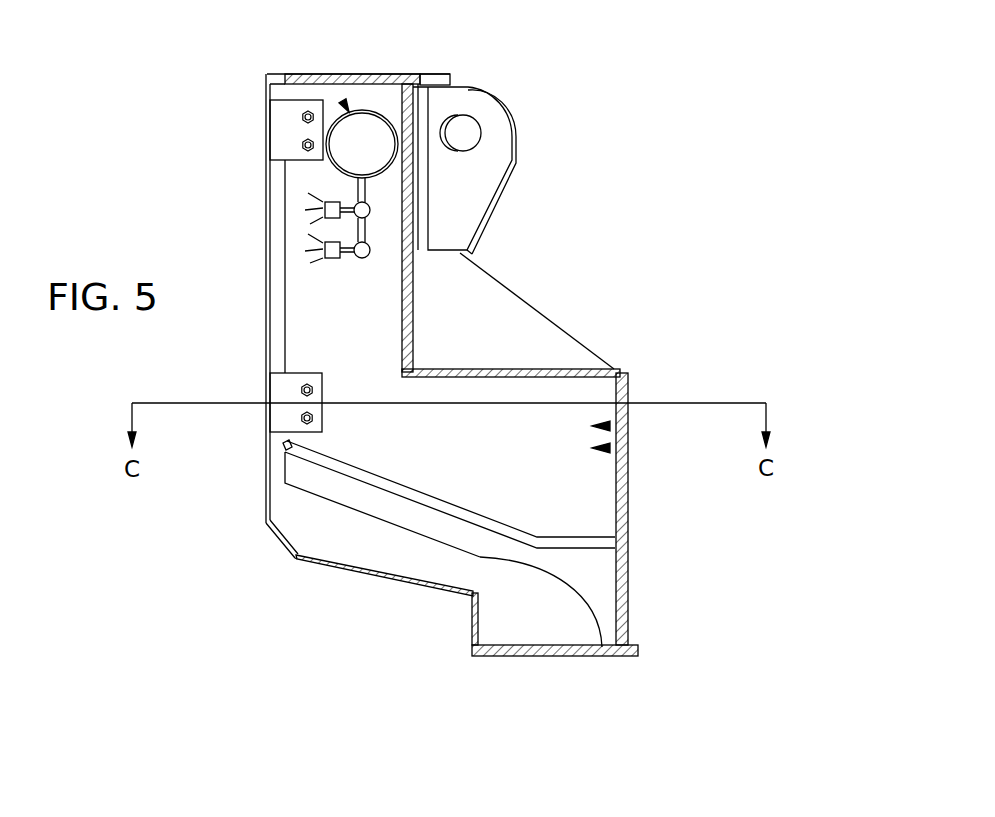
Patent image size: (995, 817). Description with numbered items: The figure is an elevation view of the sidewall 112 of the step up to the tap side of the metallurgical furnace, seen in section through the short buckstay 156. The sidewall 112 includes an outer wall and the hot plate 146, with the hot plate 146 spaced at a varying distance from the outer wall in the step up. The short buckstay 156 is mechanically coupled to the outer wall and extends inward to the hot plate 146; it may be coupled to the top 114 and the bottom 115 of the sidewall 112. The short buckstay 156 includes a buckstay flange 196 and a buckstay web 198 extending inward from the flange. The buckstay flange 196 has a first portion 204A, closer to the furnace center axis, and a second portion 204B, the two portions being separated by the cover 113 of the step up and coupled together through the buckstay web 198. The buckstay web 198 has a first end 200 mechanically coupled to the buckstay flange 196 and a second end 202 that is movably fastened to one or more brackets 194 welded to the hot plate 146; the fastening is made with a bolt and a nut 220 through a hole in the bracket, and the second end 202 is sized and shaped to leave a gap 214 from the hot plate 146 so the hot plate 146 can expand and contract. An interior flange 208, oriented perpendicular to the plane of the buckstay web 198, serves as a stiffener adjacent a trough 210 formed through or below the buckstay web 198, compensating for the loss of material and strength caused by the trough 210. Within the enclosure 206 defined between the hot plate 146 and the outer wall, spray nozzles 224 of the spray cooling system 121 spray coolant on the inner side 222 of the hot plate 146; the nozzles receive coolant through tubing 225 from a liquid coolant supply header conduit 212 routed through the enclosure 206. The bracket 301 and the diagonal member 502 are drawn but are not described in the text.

The top 114 is at (310, 72).
The spray cooling system 121 is at (342, 100).
The liquid coolant supply header conduit 212 is at (382, 118).
The mounting bracket 301 is at (512, 110).
The bracket 194 is at (284, 122).
The buckstay web 198 is at (312, 207).
The tubing 225 is at (363, 193).
The first portion 204A is at (413, 217).
The second end 202 is at (290, 273).
The spray nozzle 224 is at (333, 258).
The inner side 222 is at (270, 297).
The gap 214 is at (277, 322).
The diagonal brace 502 is at (518, 337).
The cover 113 is at (597, 368).
The nut 220 is at (316, 388).
The short buckstay 156 is at (610, 426).
The enclosure 206 is at (610, 449).
The interior flange 208 is at (423, 492).
The first end 200 is at (602, 480).
The sidewall 112 is at (575, 497).
The hot plate 146 is at (266, 507).
The buckstay flange 196 is at (628, 550).
The second portion 204B is at (629, 636).
The trough 210 is at (507, 623).
The bottom 115 is at (582, 657).